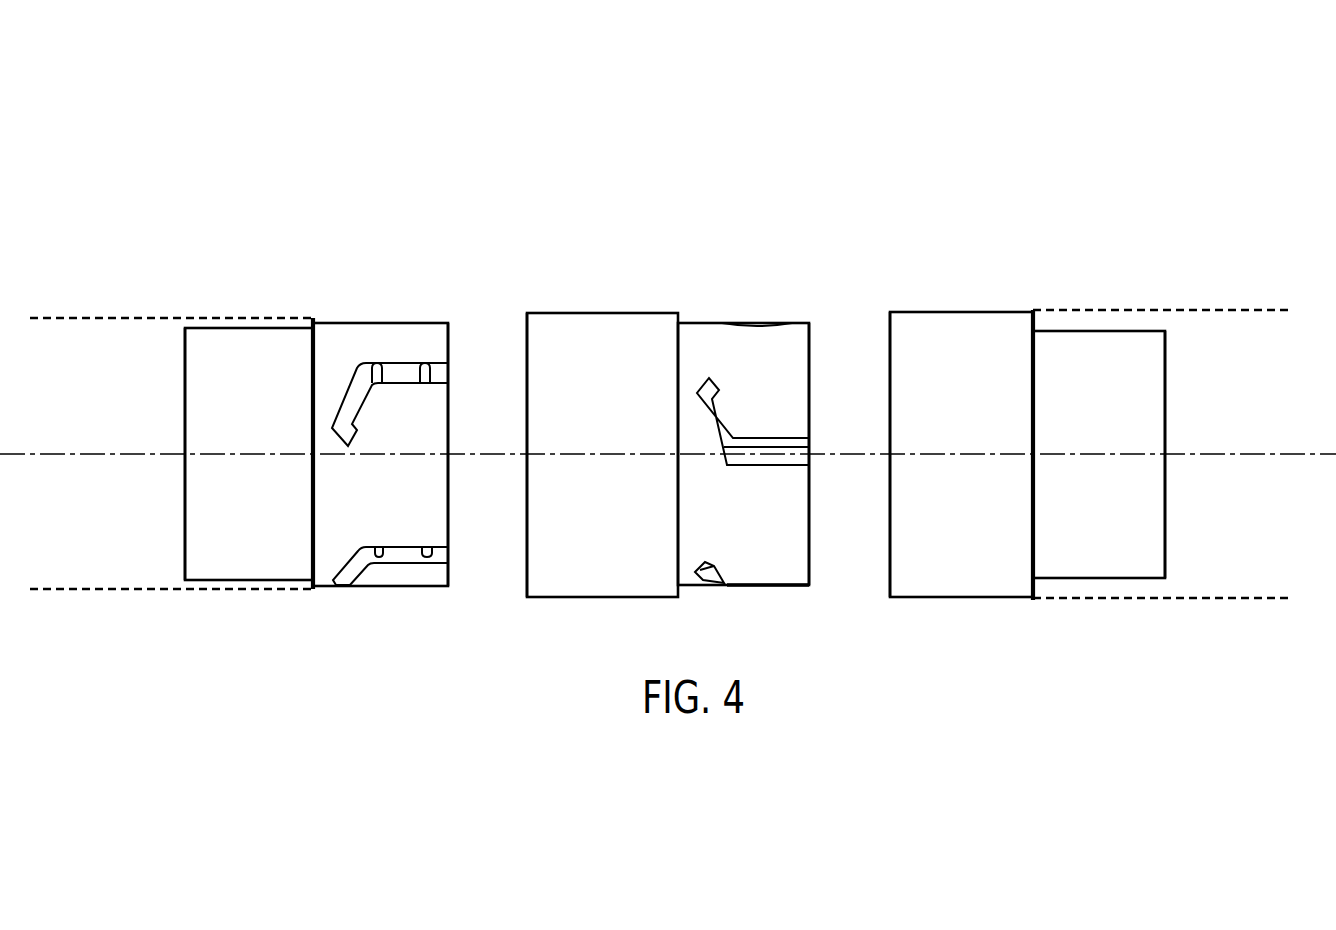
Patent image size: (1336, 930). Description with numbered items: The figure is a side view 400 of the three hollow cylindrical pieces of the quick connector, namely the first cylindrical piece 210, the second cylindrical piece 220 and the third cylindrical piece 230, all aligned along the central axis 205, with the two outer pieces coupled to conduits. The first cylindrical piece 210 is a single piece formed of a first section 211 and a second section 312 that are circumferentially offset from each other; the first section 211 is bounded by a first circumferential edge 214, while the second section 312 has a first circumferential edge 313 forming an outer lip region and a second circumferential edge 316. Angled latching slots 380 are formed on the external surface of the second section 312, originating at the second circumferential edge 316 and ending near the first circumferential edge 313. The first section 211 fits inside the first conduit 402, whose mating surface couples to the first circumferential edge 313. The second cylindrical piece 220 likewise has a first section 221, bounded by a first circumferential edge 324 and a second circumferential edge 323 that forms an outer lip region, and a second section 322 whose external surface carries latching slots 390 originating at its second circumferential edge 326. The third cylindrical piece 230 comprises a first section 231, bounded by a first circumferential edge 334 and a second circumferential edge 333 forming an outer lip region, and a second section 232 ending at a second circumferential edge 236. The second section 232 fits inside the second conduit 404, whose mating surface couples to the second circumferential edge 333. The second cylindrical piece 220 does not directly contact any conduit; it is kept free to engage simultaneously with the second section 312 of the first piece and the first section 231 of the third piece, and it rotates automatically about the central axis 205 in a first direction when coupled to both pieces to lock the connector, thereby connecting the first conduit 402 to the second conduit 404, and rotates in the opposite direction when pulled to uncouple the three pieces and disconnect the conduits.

The connector assembly 400 is at (182, 110).
The central longitudinal axis 205 is at (1305, 448).
The first conduit 402 is at (143, 317).
The second conduit 404 is at (1187, 307).
The first cylindrical piece 210 is at (369, 284).
The first section 211 is at (260, 527).
The first circumferential edge 214 is at (183, 545).
The second section 312 is at (397, 527).
The second circumferential edge 316 is at (448, 577).
The latching slots 380 is at (405, 362).
The first circumferential edge 313 is at (317, 559).
The second cylindrical piece 220 is at (676, 284).
The first section 221 is at (611, 527).
The first circumferential edge 324 is at (525, 572).
The second section 322 is at (756, 527).
The second circumferential edge 326 is at (810, 577).
The latching slots 390 is at (750, 438).
The second circumferential edge 323 is at (678, 577).
The third cylindrical piece 230 is at (1031, 284).
The first section 231 is at (972, 527).
The first circumferential edge 334 is at (890, 572).
The second circumferential edge 333 is at (1032, 562).
The second section 232 is at (1119, 527).
The second circumferential edge 236 is at (1167, 555).